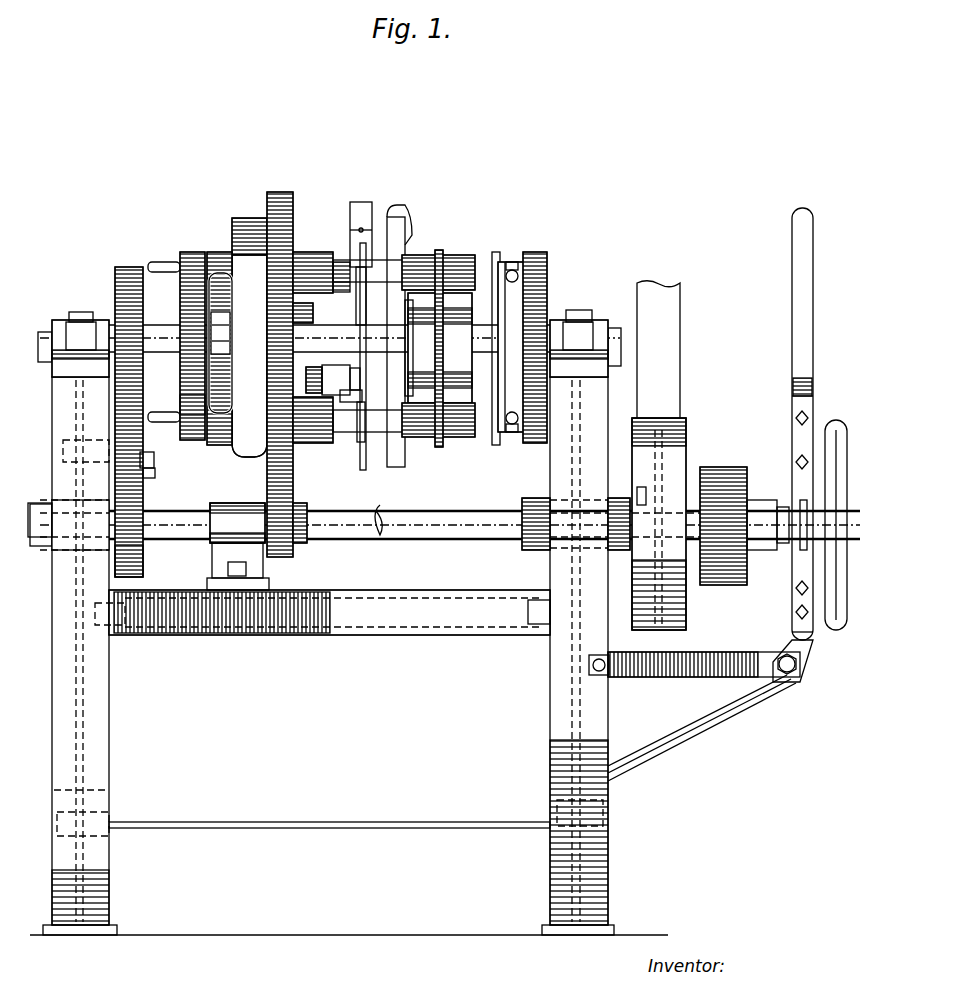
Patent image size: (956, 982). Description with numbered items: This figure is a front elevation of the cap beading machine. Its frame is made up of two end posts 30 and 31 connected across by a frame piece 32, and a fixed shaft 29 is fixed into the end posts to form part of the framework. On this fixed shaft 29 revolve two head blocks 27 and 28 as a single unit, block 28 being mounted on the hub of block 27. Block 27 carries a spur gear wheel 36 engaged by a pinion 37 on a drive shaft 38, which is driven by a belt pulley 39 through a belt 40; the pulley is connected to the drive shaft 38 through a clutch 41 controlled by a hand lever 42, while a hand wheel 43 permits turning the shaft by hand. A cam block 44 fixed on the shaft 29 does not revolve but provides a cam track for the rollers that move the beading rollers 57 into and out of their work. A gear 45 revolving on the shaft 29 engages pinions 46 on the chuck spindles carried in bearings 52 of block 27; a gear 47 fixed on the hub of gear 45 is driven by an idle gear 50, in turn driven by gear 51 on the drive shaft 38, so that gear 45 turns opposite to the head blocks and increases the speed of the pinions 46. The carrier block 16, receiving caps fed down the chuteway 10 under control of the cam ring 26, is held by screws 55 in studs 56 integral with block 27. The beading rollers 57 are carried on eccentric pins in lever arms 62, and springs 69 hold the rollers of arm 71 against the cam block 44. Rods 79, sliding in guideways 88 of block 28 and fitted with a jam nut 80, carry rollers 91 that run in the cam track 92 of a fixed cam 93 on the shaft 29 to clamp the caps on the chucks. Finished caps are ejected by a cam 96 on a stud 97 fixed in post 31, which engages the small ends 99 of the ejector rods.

The chuteway 10 is at (361, 202).
The carrier block 16 is at (353, 525).
The cam ring 26 is at (400, 225).
The head block 27 is at (237, 354).
The head block 28 is at (438, 348).
The fixed shaft 29 is at (48, 330).
The end post 30 is at (558, 700).
The end post 31 is at (97, 700).
The frame piece 32 is at (307, 625).
The spur gear wheel 36 is at (293, 464).
The pinion 37 is at (276, 552).
The drive shaft 38 is at (348, 530).
The belt pulley 39 is at (687, 432).
The belt 40 is at (665, 371).
The clutch 41 is at (735, 467).
The hand lever 42 is at (793, 268).
The hand wheel 43 is at (836, 630).
The cam block 44 is at (226, 356).
The gear 45 is at (180, 390).
The pinions 46 is at (194, 252).
The gear 47 is at (128, 266).
The idle gear 50 is at (118, 482).
The gear 51 is at (143, 576).
The bearings 52 is at (313, 347).
The screws 55 is at (360, 378).
The studs 56 is at (338, 369).
The beading rollers 57 is at (350, 394).
The lever arm 62 is at (311, 368).
The springs 69 is at (226, 324).
The arm 71 is at (240, 262).
The rods 79 is at (366, 250).
The jam nut 80 is at (360, 442).
The guideways 88 is at (448, 254).
The roller 91 is at (547, 296).
The cam track 92 is at (513, 347).
The fixed cam 93 is at (547, 260).
The cam 96 is at (152, 460).
The stud 97 is at (150, 477).
The small ends 99 is at (158, 262).